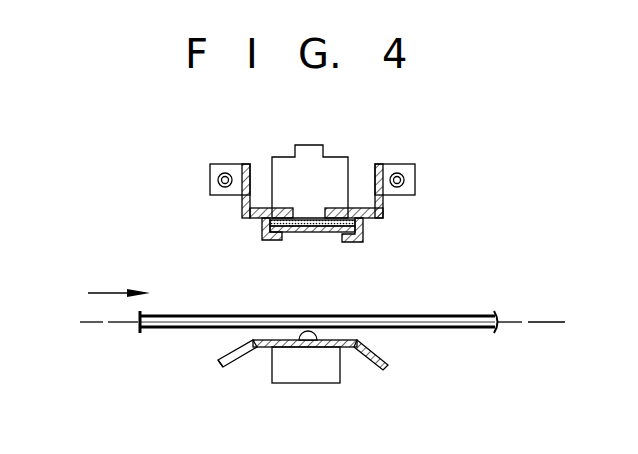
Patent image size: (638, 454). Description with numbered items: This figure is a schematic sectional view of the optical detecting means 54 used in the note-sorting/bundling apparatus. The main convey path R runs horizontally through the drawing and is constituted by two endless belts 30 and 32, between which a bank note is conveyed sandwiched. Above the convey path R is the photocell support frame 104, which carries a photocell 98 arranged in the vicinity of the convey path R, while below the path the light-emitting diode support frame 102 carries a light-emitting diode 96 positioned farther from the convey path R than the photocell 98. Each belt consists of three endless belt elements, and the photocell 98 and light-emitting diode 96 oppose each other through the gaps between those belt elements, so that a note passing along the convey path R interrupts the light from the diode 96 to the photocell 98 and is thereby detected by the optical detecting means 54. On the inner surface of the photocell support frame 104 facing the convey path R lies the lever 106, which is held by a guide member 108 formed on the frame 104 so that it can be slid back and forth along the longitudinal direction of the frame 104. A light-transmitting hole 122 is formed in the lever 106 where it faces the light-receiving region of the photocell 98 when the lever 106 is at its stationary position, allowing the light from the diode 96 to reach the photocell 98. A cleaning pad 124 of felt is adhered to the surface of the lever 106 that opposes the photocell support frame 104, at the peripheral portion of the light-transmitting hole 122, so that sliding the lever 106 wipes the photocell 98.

The endless belt 30 is at (177, 331).
The endless belt 32 is at (178, 315).
The optical detecting means 54 is at (284, 233).
The light-emitting diode 96 is at (305, 372).
The photocell 98 is at (321, 148).
The light-emitting diode support frame 102 is at (378, 370).
The photocell support frame 104 is at (245, 215).
The lever 106 is at (332, 231).
The guide member 108 is at (262, 232).
The light-transmitting hole 122 is at (312, 233).
The cleaning pad 124 is at (311, 221).
The main convey path R is at (532, 325).